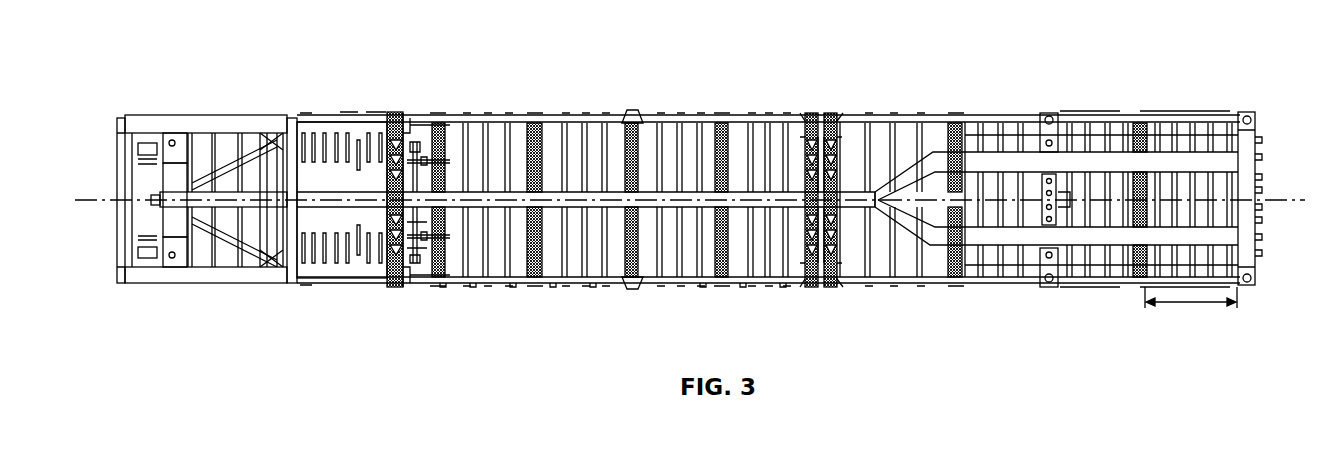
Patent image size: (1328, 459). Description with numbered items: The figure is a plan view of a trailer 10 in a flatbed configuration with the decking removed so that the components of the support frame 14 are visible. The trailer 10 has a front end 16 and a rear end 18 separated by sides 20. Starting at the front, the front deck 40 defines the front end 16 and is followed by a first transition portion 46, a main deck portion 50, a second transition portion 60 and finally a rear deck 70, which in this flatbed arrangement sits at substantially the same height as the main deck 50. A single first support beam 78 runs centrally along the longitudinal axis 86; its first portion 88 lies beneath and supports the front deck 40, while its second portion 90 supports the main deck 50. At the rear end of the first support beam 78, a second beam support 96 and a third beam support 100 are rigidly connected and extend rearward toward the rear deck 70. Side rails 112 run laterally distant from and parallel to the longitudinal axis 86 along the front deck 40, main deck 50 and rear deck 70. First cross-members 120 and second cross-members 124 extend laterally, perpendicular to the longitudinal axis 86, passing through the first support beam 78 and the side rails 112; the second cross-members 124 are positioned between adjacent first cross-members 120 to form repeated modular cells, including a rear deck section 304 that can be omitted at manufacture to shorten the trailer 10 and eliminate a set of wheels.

The trailer 10 is at (866, 73).
The support frame 14 is at (558, 289).
The front end 16 is at (115, 128).
The rear end 18 is at (1262, 120).
The sides 20 is at (668, 108).
The front deck 40 is at (220, 105).
The first transition portion 46 is at (343, 98).
The main deck portion 50 is at (545, 98).
The second transition portion 60 is at (902, 103).
The rear deck 70 is at (1097, 106).
The first support beam 78 is at (455, 192).
The longitudinal axis 86 is at (84, 205).
The first portion 88 is at (200, 204).
The second portion 90 is at (576, 208).
The second beam support 96 is at (1008, 165).
The third beam support 100 is at (1088, 235).
The side rails 112 is at (760, 124).
The first cross-members 120 is at (652, 124).
The second cross-members 124 is at (676, 260).
The rear deck section 304 is at (1190, 303).